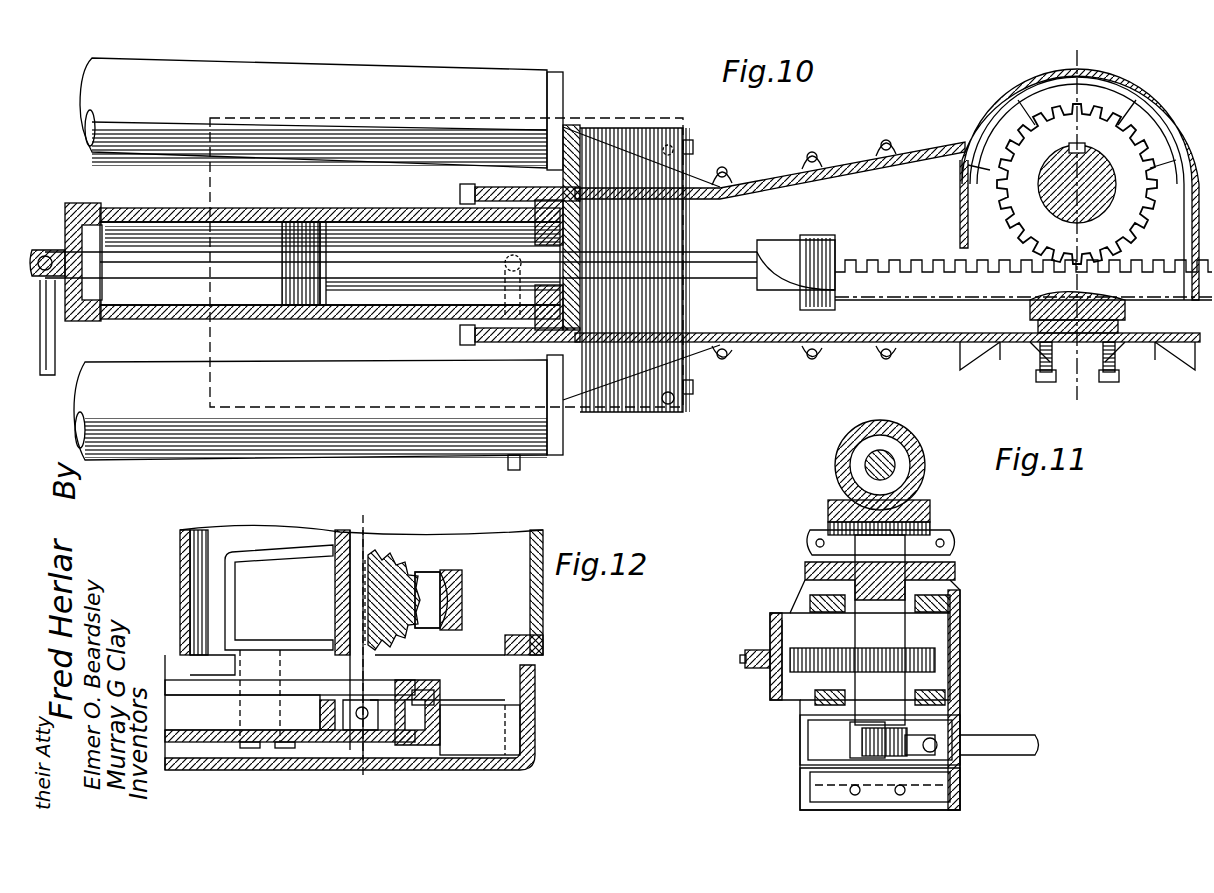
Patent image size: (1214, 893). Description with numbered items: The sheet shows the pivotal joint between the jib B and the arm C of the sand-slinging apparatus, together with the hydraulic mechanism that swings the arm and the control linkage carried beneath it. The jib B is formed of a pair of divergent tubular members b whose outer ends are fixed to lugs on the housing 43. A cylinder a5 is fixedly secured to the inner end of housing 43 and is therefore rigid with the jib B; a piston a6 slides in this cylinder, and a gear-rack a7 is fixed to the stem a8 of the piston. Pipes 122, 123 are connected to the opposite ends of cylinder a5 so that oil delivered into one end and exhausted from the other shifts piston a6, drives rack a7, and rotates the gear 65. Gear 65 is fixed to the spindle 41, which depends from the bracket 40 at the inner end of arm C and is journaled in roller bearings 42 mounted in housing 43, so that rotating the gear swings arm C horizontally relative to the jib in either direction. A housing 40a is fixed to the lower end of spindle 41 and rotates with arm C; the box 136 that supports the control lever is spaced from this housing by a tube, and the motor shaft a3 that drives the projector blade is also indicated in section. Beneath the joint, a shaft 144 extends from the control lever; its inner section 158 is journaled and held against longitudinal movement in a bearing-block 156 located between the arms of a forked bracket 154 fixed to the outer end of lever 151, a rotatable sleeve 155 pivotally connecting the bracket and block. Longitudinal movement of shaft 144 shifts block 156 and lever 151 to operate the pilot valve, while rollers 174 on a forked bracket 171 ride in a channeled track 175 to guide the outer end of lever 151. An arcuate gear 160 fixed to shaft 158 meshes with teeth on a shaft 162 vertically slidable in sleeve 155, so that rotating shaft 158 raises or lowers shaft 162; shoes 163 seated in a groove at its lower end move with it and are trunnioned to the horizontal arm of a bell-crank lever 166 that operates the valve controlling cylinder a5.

In FIG. 10, the jib B is at (387, 59).
In FIG. 10, the divergent tubular members b is at (508, 80).
In FIG. 10, the pipe 122 is at (55, 340).
In FIG. 10, the pipe 123 is at (522, 468).
In FIG. 10, the cylinder a5 is at (275, 305).
In FIG. 10, the piston a6 is at (328, 300).
In FIG. 10, the stem a8 is at (728, 262).
In FIG. 10, the gear-rack a7 is at (895, 262).
In FIG. 11, the shaft a3 is at (884, 458).
In FIG. 10, the housing 43 is at (765, 185).
In FIG. 11, the housing 43 is at (960, 622).
In FIG. 10, the gear 65 is at (1077, 184).
In FIG. 11, the gear 65 is at (940, 658).
In FIG. 10, the spindle 41 is at (1078, 225).
In FIG. 11, the spindle 41 is at (880, 630).
In FIG. 11, the bracket 40 is at (912, 446).
In FIG. 11, the roller bearings 42 is at (958, 582).
In FIG. 11, the housing 40a is at (962, 728).
In FIG. 12, the housing 40a is at (540, 655).
In FIG. 11, the box 136 is at (1025, 758).
In FIG. 11, the shaft 144 is at (955, 758).
In FIG. 12, the shaft 144 is at (457, 600).
In FIG. 12, the lever 151 is at (200, 742).
In FIG. 11, the forked bracket 154 is at (852, 735).
In FIG. 12, the forked bracket 154 is at (290, 545).
In FIG. 12, the rotatable sleeve 155 is at (335, 573).
In FIG. 11, the bearing-block 156 is at (940, 765).
In FIG. 12, the bearing-block 156 is at (462, 585).
In FIG. 12, the inner section of shaft 158 is at (440, 580).
In FIG. 12, the arcuate gear 160 is at (400, 580).
In FIG. 12, the shaft 162 is at (350, 593).
In FIG. 12, the shoes 163 is at (380, 730).
In FIG. 12, the bell-crank lever 166 is at (290, 705).
In FIG. 12, the forked bracket 171 is at (450, 768).
In FIG. 11, the rollers 174 is at (800, 798).
In FIG. 12, the rollers 174 is at (440, 718).
In FIG. 11, the channeled track 175 is at (950, 793).
In FIG. 12, the channeled track 175 is at (440, 698).